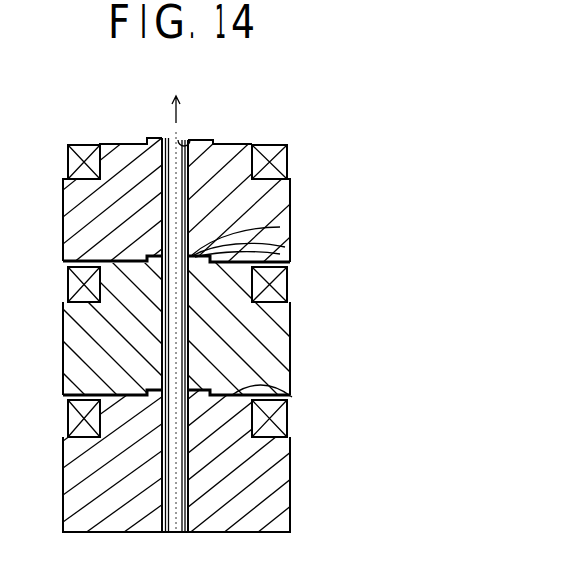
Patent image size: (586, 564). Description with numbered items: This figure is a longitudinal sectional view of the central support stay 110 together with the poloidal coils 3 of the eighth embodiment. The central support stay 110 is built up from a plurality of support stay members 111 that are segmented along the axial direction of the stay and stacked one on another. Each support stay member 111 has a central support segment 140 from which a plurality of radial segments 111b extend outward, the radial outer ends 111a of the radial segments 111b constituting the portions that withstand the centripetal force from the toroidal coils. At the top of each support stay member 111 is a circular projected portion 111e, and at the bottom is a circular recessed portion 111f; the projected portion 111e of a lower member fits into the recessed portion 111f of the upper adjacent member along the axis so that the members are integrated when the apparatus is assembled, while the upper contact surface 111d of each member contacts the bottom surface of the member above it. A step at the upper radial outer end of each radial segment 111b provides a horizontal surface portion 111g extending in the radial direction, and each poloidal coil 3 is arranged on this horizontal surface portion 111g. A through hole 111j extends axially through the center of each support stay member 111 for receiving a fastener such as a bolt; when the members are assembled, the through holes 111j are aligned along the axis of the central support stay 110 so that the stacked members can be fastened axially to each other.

The poloidal coil 3 is at (289, 150).
The central support stay 110 is at (247, 313).
The support stay member 111 is at (220, 327).
The radial outer end 111a is at (291, 200).
The radial segment 111b is at (280, 227).
The upper contact surface 111d is at (292, 397).
The circular projected portion 111e is at (280, 254).
The circular recessed portion 111f is at (285, 247).
The horizontal surface portion 111g is at (267, 179).
The through hole 111j is at (182, 140).
The central support segment 140 is at (155, 137).